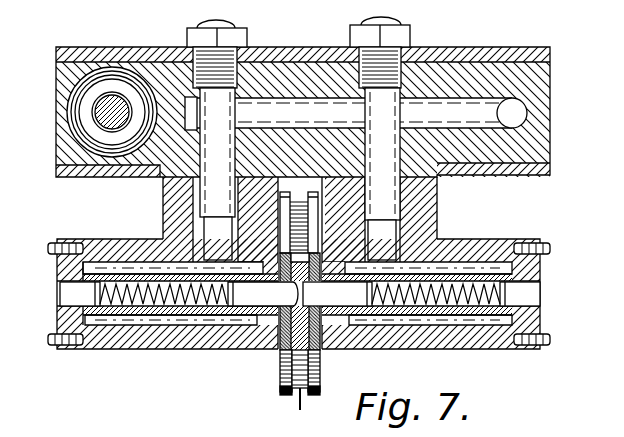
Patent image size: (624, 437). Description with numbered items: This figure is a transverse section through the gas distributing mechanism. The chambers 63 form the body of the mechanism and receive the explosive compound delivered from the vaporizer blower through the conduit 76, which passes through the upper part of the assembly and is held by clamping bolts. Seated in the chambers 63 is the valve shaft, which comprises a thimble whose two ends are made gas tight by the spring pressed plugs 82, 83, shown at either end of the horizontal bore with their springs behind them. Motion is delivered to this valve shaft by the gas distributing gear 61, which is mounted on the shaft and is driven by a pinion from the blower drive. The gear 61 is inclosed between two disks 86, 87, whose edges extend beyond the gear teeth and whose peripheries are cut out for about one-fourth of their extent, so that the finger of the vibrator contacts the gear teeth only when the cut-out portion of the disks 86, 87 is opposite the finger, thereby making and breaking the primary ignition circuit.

The conduit 76 is at (210, 250).
The chambers 63 is at (127, 325).
The spring pressed plug 83 is at (63, 292).
The spring pressed plug 82 is at (247, 297).
The disk 87 is at (286, 374).
The disk 86 is at (318, 378).
The gas distributing gear 61 is at (303, 392).